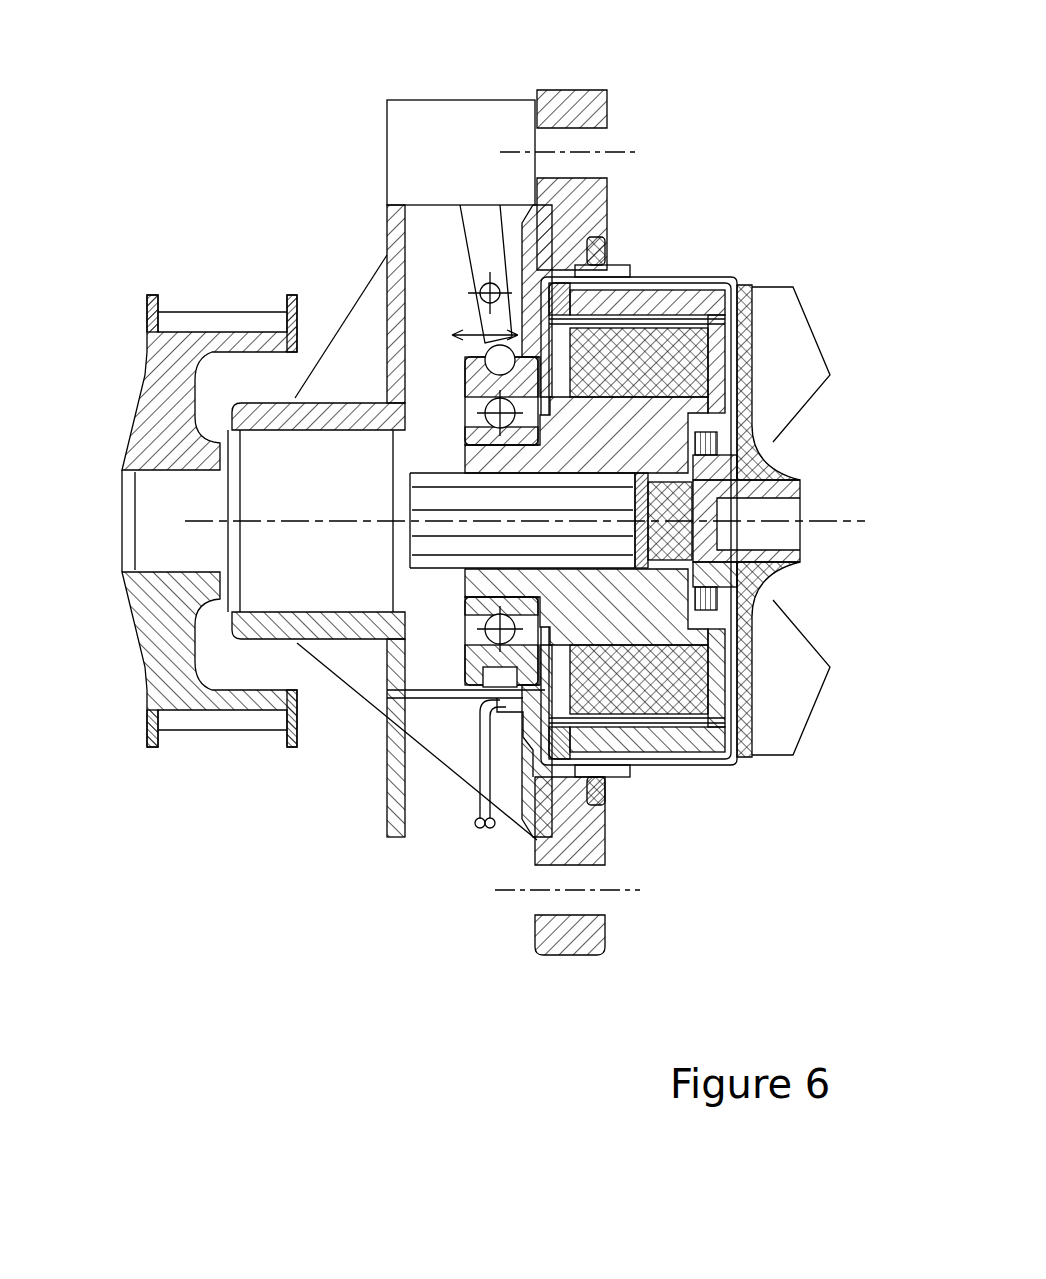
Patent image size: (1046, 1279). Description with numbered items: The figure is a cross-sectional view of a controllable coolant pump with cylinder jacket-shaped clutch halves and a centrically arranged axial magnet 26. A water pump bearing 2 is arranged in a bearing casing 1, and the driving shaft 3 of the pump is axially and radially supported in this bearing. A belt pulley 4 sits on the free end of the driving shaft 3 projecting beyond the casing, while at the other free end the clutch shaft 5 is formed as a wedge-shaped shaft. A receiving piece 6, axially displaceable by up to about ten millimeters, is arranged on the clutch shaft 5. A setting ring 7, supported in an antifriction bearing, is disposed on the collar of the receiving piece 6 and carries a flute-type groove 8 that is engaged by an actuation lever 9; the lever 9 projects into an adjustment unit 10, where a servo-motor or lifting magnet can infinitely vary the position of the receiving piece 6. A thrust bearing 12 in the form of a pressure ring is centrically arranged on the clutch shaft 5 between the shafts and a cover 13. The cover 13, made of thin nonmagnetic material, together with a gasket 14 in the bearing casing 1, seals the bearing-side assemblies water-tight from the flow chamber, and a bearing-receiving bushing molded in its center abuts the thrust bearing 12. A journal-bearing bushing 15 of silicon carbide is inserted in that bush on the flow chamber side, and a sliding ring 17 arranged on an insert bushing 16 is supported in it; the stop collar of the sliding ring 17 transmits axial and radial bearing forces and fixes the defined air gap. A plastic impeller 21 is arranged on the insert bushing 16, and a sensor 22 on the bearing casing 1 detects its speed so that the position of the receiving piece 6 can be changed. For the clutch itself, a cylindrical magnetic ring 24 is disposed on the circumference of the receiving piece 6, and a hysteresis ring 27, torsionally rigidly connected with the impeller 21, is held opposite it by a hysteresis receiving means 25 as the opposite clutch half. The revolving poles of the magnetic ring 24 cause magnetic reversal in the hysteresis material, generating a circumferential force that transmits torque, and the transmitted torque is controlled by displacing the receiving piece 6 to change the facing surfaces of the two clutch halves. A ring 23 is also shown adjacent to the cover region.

The bearing casing 1 is at (362, 407).
The water pump bearing 2 is at (295, 503).
The driving shaft 3 is at (121, 468).
The belt pulley 4 is at (186, 382).
The clutch shaft 5 is at (463, 545).
The receiving piece 6 is at (556, 700).
The setting ring 7 is at (461, 415).
The flute-type groove 8 is at (483, 687).
The actuation lever 9 is at (478, 240).
The adjustment unit 10 is at (476, 120).
The thrust bearing 12 is at (668, 480).
The cover 13 is at (752, 362).
The gasket 14 is at (600, 798).
The journal-bearing bushing 15 is at (750, 633).
The insert bushing 16 is at (800, 552).
The sliding ring 17 is at (780, 603).
The impeller 21 is at (752, 393).
The sensor 22 is at (520, 745).
The retaining ring 23 is at (548, 278).
The magnetic ring 24 is at (710, 283).
The hysteresis receiving means 25 is at (737, 278).
The axial magnet 26 is at (717, 503).
The hysteresis ring 27 is at (685, 283).